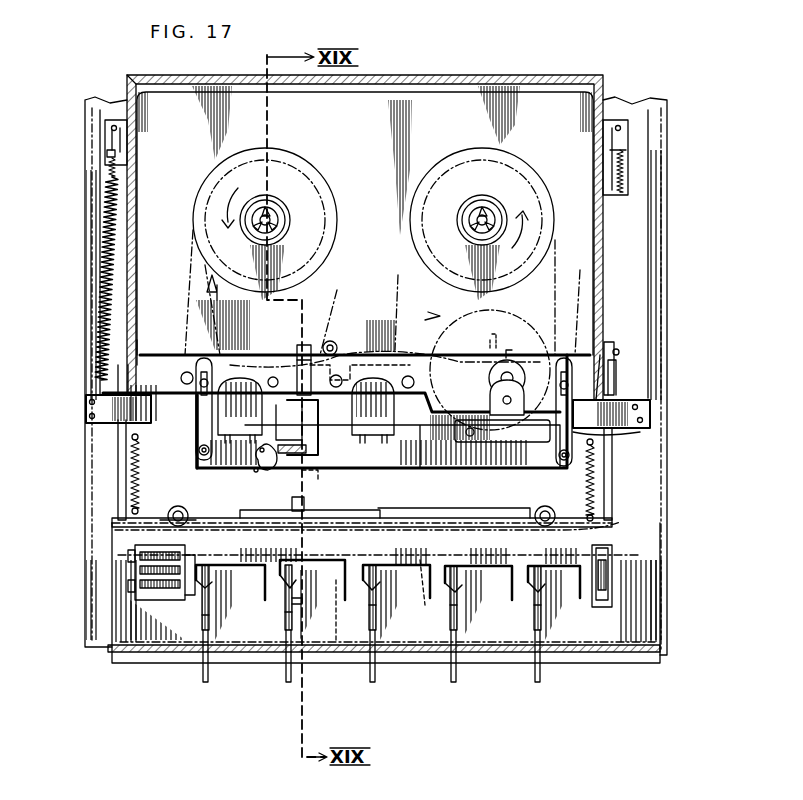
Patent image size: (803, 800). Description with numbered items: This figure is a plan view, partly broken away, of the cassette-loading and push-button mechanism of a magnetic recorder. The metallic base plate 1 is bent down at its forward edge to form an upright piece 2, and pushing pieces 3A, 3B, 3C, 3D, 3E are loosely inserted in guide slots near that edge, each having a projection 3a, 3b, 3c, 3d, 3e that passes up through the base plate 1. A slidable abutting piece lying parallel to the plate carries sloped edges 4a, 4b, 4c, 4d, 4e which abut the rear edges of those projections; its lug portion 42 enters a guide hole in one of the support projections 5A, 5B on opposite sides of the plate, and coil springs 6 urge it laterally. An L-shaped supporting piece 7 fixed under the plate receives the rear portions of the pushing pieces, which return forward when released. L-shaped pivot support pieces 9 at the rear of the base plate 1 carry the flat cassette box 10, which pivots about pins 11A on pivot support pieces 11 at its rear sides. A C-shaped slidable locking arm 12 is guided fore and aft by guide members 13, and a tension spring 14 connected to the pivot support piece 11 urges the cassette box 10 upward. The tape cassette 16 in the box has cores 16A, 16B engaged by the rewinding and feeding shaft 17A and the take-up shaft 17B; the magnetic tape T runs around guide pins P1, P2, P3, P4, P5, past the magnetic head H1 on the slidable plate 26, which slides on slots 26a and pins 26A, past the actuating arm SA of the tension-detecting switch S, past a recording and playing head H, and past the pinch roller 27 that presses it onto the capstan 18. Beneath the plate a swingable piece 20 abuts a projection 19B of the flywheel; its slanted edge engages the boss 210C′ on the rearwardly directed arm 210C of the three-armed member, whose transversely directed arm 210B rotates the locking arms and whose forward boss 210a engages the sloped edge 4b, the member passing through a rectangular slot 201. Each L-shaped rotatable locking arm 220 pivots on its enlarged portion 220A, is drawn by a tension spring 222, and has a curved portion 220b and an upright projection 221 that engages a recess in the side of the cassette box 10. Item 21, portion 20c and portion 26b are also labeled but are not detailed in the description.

The base plate 1 is at (650, 220).
The upright piece 2 is at (648, 658).
The pushing piece 3A is at (200, 670).
The pushing piece 3B is at (285, 670).
The pushing piece 3C is at (370, 672).
The pushing piece 3D is at (452, 672).
The pushing piece 3E is at (535, 674).
The projection 3a is at (210, 640).
The projection 3b is at (293, 640).
The projection 3c is at (377, 640).
The projection 3d is at (458, 640).
The projection 3e is at (542, 640).
The sloped edge 4a is at (208, 582).
The sloped edge 4b is at (282, 592).
The sloped edge 4c is at (380, 588).
The sloped edge 4d is at (460, 590).
The sloped edge 4e is at (542, 590).
The support projection 5A is at (140, 605).
The support projection 5B is at (612, 598).
The coil spring 6 is at (165, 590).
The L-shaped supporting piece 7 is at (492, 515).
The pivot support piece 9 is at (112, 165).
The cassette box 10 is at (128, 74).
The pivot support piece 11 is at (118, 148).
The pivot pin 11A is at (113, 130).
The slidable locking arm 12 is at (612, 395).
The guide member 13 is at (92, 408).
The tension spring 14 is at (104, 283).
The tape cassette 16 is at (397, 78).
The core 16A is at (282, 214).
The core 16B is at (500, 210).
The rewinding and feeding rotatable shaft 17A is at (272, 212).
The take-up rotatable shaft 17B is at (490, 212).
The capstan 18 is at (485, 353).
The projection 19B is at (510, 352).
The swingable piece 20 is at (385, 352).
The lever portion 20c is at (490, 350).
The roller 21 is at (334, 345).
The slidable plate 26 is at (417, 470).
The slot 26a is at (195, 456).
The pin 26A is at (198, 406).
The head plate edge 26b is at (615, 432).
The pinch roller 27 is at (488, 392).
The lug portion 42 is at (610, 565).
The rectangular slot 201 is at (306, 504).
The downwardly directed boss 210a is at (340, 640).
The transversely directed arm 210B is at (425, 610).
The rearwardly directed arm 210C is at (318, 478).
The boss 210C′ is at (312, 350).
The rotatable locking arm 220 is at (120, 490).
The enlarged portion 220A is at (620, 522).
The curved portion 220b is at (115, 378).
The upright projection 221 is at (140, 350).
The tension spring 222 is at (135, 465).
The magnetic head H is at (372, 438).
The magnetic head H1 is at (237, 372).
The guide pin P1 is at (192, 370).
The guide pin P2 is at (274, 378).
The guide pin P3 is at (334, 392).
The guide pin P4 is at (410, 392).
The guide pin P5 is at (615, 345).
The switch S is at (274, 470).
The actuating arm SA is at (290, 456).
The magnetic tape T is at (190, 280).